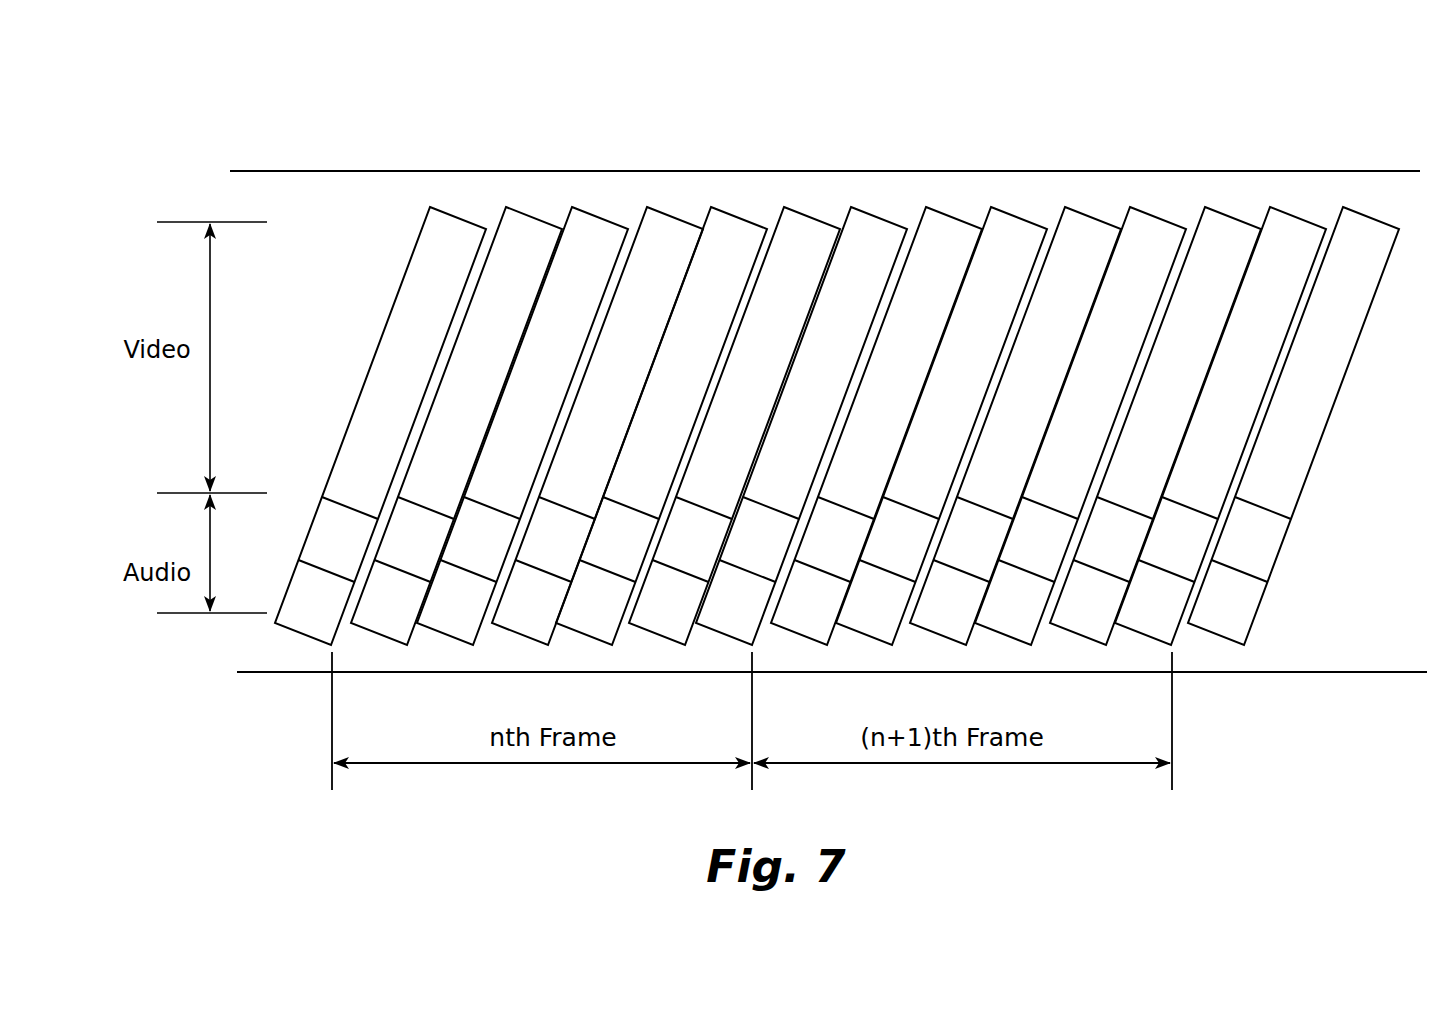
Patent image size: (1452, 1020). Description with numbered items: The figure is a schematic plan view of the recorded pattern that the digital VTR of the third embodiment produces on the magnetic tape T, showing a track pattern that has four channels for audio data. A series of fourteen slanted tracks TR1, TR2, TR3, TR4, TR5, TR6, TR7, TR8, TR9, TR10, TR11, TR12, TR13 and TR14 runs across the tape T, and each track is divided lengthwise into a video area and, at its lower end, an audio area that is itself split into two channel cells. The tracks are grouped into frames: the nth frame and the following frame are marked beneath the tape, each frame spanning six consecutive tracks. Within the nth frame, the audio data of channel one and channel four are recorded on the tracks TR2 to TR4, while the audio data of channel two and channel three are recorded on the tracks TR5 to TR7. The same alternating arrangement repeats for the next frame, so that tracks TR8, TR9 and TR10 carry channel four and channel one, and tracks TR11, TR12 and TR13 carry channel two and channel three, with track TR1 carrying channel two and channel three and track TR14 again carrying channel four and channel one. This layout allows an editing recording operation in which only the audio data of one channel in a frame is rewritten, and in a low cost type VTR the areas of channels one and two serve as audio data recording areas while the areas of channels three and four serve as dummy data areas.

The magnetic tape T is at (291, 170).
The track TR1 is at (380, 359).
The track TR2 is at (456, 375).
The track TR3 is at (522, 359).
The track TR4 is at (597, 375).
The track TR5 is at (661, 359).
The track TR6 is at (734, 375).
The track TR7 is at (801, 359).
The track TR8 is at (876, 375).
The track TR9 is at (941, 359).
The track TR10 is at (1016, 375).
The track TR11 is at (1081, 359).
The track TR12 is at (1156, 375).
The track TR13 is at (1223, 359).
The track TR14 is at (1299, 375).